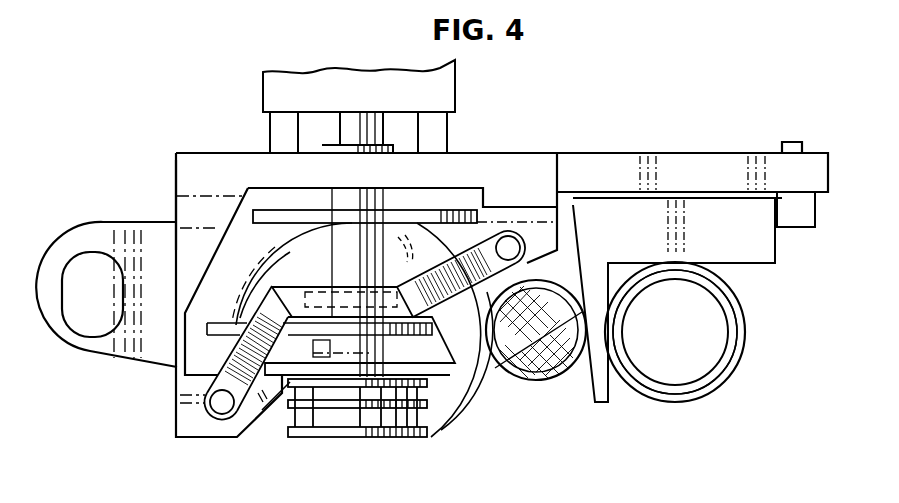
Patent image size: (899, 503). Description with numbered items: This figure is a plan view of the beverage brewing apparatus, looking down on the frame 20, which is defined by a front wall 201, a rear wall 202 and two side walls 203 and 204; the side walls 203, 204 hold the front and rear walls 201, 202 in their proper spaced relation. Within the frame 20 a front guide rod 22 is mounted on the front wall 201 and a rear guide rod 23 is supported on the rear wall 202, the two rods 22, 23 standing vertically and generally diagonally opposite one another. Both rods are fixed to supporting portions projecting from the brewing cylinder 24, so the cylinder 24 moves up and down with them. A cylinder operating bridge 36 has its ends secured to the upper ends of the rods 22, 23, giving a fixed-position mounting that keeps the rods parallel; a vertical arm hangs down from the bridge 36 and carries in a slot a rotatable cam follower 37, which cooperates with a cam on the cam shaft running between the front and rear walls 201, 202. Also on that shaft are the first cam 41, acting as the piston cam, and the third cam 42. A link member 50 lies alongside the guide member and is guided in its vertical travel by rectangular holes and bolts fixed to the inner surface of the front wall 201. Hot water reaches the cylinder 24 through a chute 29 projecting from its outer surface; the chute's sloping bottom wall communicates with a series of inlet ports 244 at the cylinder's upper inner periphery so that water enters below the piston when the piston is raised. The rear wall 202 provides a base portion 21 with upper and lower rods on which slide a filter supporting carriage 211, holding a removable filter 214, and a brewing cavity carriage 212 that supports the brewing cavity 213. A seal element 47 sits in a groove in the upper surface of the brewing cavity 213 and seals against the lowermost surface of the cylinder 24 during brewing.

The frame 20 is at (217, 168).
The base portion 21 is at (777, 274).
The front guide rod 22 is at (212, 400).
The rear guide rod 23 is at (508, 232).
The brewing cylinder 24 is at (270, 422).
The chute 29 is at (84, 357).
The cylinder operating bridge 36 is at (297, 290).
The cam follower 37 is at (410, 262).
The first cam 41 is at (217, 334).
The third cam 42 is at (417, 212).
The seal element 47 is at (727, 302).
The link member 50 is at (364, 438).
The front wall 201 is at (310, 370).
The rear wall 202 is at (543, 152).
The side wall 203 is at (176, 175).
The side wall 204 is at (553, 223).
The filter supporting carriage 211 is at (529, 388).
The brewing cavity carriage 212 is at (726, 380).
The brewing cavity 213 is at (647, 382).
The filter 214 is at (515, 368).
The inlet ports 244 is at (268, 270).